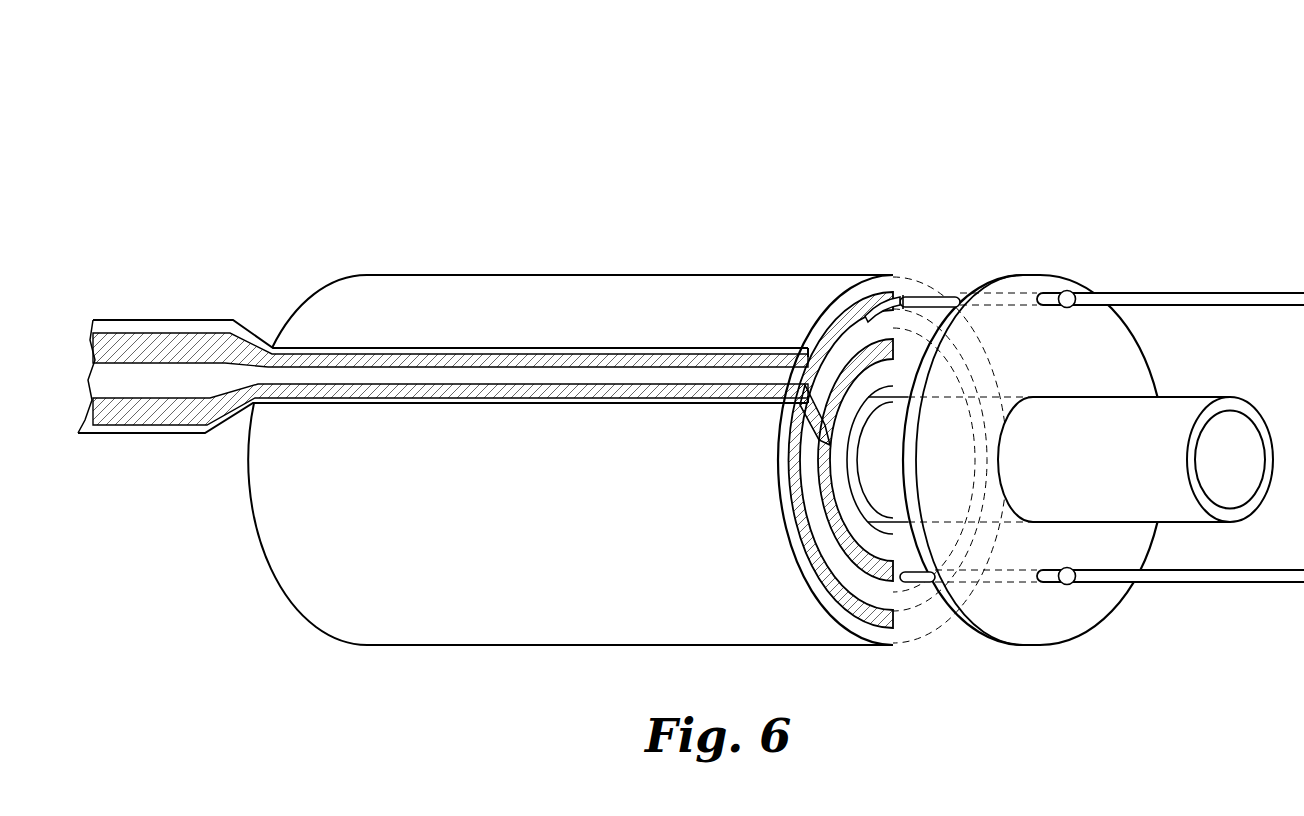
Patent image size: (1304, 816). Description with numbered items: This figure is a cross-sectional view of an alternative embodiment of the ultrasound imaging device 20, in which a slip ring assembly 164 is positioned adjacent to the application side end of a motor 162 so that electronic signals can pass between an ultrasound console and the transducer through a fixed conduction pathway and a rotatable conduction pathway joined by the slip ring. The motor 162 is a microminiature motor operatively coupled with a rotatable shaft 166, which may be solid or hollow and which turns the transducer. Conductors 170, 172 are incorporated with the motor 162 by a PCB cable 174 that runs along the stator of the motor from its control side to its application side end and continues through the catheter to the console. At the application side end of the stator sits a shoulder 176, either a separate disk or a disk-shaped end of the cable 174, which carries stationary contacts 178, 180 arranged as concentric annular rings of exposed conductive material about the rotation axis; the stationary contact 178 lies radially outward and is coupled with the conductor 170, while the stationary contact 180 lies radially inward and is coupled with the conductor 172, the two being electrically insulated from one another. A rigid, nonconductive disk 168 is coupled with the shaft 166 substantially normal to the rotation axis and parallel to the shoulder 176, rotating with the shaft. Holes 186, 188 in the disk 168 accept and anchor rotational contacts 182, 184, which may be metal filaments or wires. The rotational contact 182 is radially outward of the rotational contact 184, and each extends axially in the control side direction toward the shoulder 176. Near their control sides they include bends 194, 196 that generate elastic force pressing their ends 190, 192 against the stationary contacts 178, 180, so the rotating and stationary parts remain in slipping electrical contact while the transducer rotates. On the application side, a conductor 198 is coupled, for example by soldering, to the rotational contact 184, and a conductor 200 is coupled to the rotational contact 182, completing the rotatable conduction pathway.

The device 20 is at (700, 145).
The motor 162 is at (507, 300).
The slip ring assembly 164 is at (975, 236).
The rotatable shaft 166 is at (1145, 413).
The disk 168 is at (1105, 360).
The conductor 170 is at (377, 355).
The conductor 172 is at (303, 388).
The PCB cable 174 is at (185, 320).
The shoulder 176 is at (900, 290).
The stationary contact 178 is at (838, 587).
The stationary contact 180 is at (887, 583).
The rotational contact 182 is at (945, 305).
The rotational contact 184 is at (1018, 585).
The hole 186 is at (1052, 292).
The hole 188 is at (1055, 584).
The end 190 is at (862, 310).
The end 192 is at (955, 565).
The bend 194 is at (905, 300).
The bend 196 is at (952, 620).
The conductor 198 is at (1265, 585).
The conductor 200 is at (1262, 292).